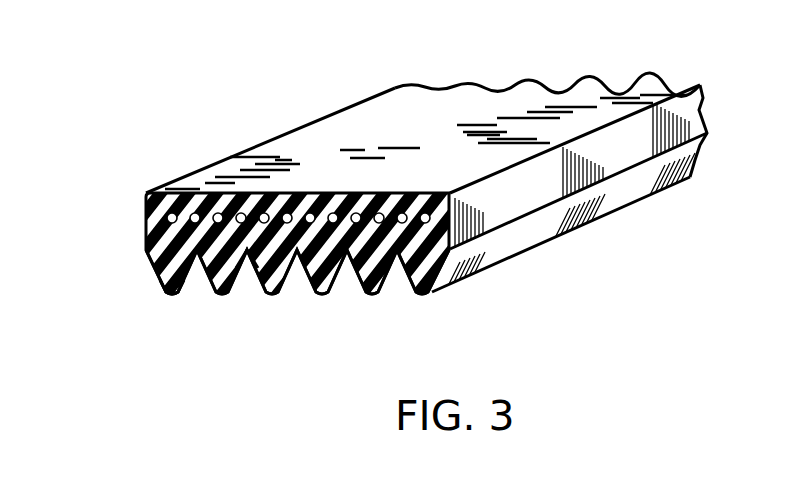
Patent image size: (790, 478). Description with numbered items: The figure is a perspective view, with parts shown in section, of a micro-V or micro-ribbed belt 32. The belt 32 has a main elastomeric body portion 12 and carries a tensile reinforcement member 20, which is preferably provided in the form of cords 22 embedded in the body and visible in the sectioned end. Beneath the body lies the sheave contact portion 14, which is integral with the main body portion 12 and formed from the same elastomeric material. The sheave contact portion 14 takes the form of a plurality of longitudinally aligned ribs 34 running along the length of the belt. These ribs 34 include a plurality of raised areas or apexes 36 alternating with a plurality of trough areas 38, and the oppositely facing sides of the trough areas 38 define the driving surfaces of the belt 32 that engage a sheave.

The main elastomeric body portion 12 is at (446, 130).
The sheave contact portion 14 is at (508, 267).
The tensile reinforcement member 20 is at (148, 253).
The cords 22 is at (273, 216).
The micro-V belt 32 is at (262, 115).
The ribs 34 is at (296, 300).
The apexes 36 is at (170, 292).
The trough areas 38 is at (242, 292).